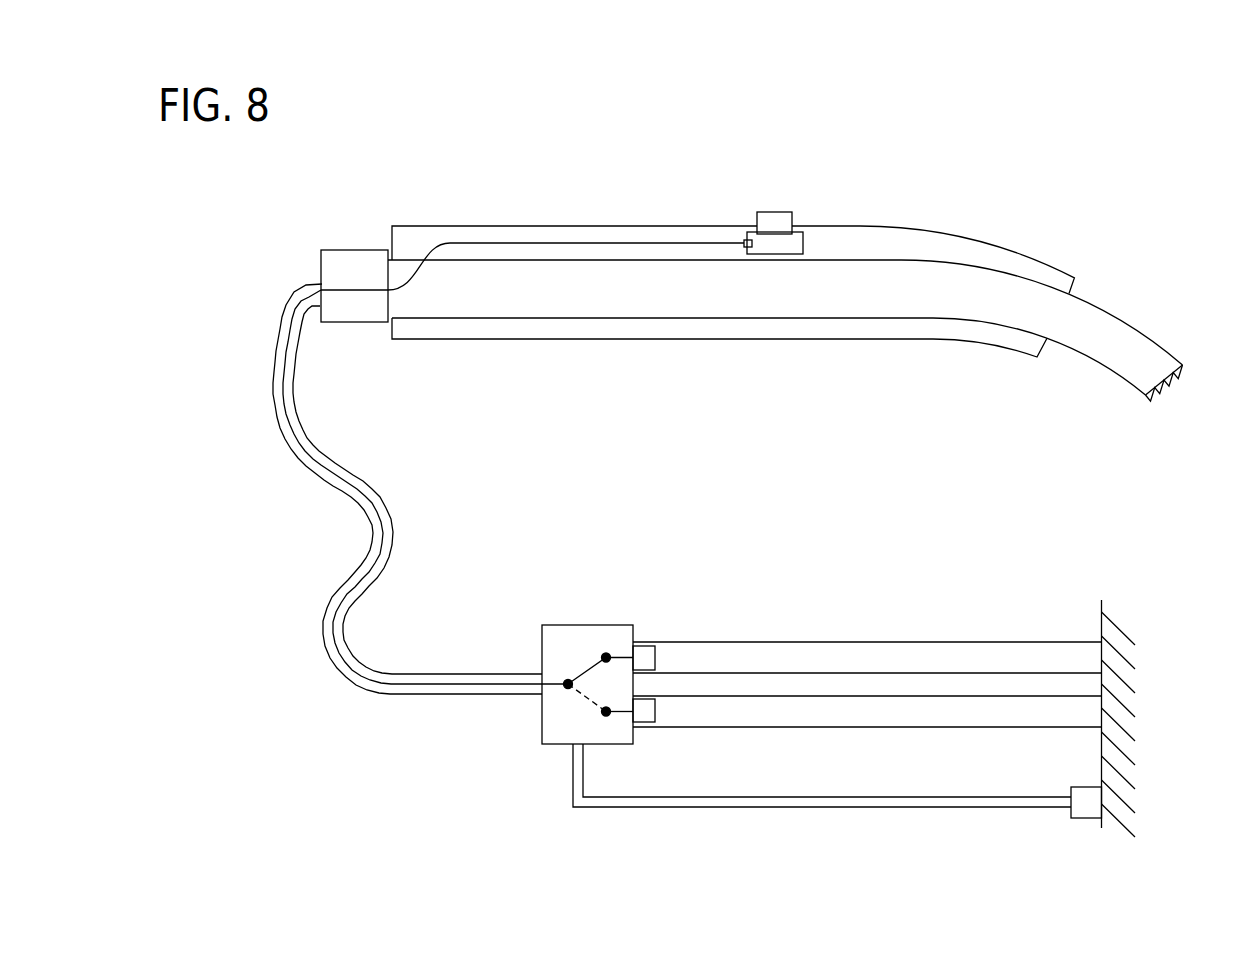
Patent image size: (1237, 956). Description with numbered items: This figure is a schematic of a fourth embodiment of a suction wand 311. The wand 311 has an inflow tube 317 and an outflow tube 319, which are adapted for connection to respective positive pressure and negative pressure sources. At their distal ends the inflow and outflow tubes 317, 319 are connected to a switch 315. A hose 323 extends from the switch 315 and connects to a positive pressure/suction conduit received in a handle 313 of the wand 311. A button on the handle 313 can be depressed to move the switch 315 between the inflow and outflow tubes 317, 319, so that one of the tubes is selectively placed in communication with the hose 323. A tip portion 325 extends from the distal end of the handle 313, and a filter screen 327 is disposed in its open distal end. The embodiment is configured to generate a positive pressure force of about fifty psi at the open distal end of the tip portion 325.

The suction wand 311 is at (1134, 194).
The handle 313 is at (415, 240).
The switch 315 is at (580, 637).
The inflow tube 317 is at (758, 713).
The outflow tube 319 is at (825, 657).
The hose 323 is at (777, 222).
The tip portion 325 is at (1113, 330).
The filter screen 327 is at (1158, 383).